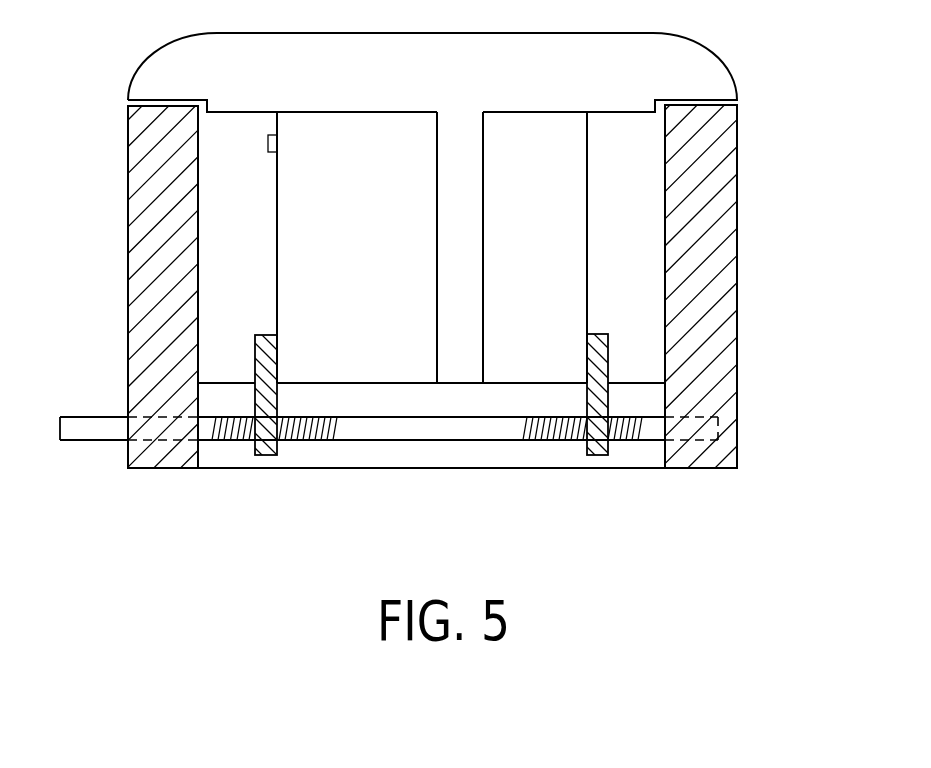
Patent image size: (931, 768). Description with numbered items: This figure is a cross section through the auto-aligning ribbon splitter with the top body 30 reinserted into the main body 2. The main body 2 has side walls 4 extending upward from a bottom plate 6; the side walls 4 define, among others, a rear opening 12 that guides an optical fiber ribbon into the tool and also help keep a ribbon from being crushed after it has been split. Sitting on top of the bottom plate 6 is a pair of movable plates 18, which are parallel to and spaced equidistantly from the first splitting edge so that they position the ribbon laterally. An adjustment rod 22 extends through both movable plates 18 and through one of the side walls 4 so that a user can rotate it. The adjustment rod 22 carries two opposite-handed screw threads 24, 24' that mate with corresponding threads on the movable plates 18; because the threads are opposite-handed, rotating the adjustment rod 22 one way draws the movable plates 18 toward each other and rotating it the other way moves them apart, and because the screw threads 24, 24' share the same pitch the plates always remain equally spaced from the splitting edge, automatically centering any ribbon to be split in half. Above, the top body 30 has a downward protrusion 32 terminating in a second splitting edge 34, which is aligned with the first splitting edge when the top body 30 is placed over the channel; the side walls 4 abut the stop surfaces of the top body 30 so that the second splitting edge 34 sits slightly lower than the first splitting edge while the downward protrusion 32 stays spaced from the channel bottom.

The main body 2 is at (768, 115).
The side walls 4 is at (138, 153).
The bottom plate 6 is at (430, 453).
The rear opening 12 is at (332, 127).
The movable plates 18 is at (263, 450).
The adjustment rod 22 is at (502, 430).
The screw threads 24 is at (274, 472).
The screw threads 24' is at (592, 471).
The top body 30 is at (411, 86).
The downward protrusion 32 is at (465, 293).
The second splitting edge 34 is at (440, 382).